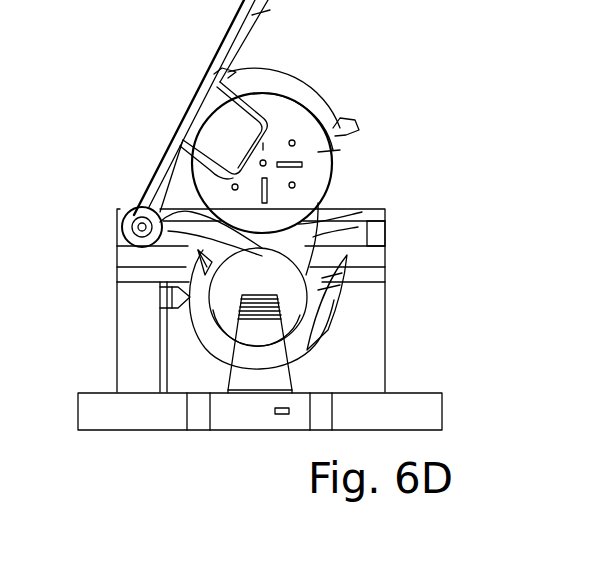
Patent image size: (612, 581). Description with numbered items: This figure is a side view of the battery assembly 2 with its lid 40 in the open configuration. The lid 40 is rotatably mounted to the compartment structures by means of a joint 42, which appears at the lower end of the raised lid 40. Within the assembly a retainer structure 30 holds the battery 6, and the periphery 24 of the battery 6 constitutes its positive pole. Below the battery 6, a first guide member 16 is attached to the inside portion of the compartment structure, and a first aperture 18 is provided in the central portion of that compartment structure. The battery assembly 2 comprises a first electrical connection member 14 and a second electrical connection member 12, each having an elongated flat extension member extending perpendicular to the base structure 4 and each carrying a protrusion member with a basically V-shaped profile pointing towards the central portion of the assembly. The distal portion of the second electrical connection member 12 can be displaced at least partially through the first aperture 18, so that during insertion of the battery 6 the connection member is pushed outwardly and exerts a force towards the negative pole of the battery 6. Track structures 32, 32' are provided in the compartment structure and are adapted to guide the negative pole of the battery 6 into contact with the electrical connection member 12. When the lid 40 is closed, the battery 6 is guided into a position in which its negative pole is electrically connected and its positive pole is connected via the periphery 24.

The battery assembly 2 is at (95, 92).
The base structure 4 is at (98, 393).
The battery 6 is at (340, 150).
The second electrical connection member 12 is at (305, 322).
The first electrical connection member 14 is at (178, 296).
The first guide member 16 is at (322, 297).
The first aperture 18 is at (223, 312).
The periphery of the battery 24 is at (340, 168).
The retainer structure 30 is at (330, 85).
The track structure 32 is at (186, 136).
The track structure 32' is at (296, 230).
The lid 40 is at (230, 52).
The joint 42 is at (136, 227).